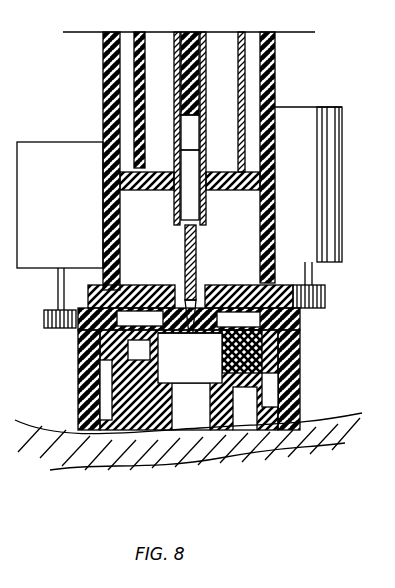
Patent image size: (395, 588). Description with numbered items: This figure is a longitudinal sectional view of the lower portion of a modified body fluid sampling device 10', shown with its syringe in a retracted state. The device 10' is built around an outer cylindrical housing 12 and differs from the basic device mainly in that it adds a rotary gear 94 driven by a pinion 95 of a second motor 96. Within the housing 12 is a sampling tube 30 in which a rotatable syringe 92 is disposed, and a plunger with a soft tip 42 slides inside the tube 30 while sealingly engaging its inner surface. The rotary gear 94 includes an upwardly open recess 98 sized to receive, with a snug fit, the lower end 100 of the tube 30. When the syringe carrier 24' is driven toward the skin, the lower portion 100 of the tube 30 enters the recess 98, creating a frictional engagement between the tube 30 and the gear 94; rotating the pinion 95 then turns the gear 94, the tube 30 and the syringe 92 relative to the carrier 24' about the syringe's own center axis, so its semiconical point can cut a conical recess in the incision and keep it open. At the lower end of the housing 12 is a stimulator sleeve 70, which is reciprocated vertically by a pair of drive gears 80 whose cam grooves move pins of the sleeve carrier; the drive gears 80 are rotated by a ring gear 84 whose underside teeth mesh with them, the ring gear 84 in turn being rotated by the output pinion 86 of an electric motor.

The body fluid sampling device 10' is at (220, 41).
The outer cylindrical housing 12 is at (103, 52).
The syringe carrier 24' is at (308, 157).
The sampling tube 30 is at (207, 157).
The soft tip 42 is at (182, 130).
The stimulator sleeve 70 is at (126, 448).
The drive gears 80 is at (78, 398).
The ring gear 84 is at (303, 323).
The output pinion 86 is at (37, 148).
The rotatable syringe 92 is at (195, 268).
The rotary gear 94 is at (88, 292).
The pinion 95 is at (327, 298).
The second motor 96 is at (328, 200).
The upwardly open recess 98 is at (186, 282).
The lower end of the tube 100 is at (198, 237).